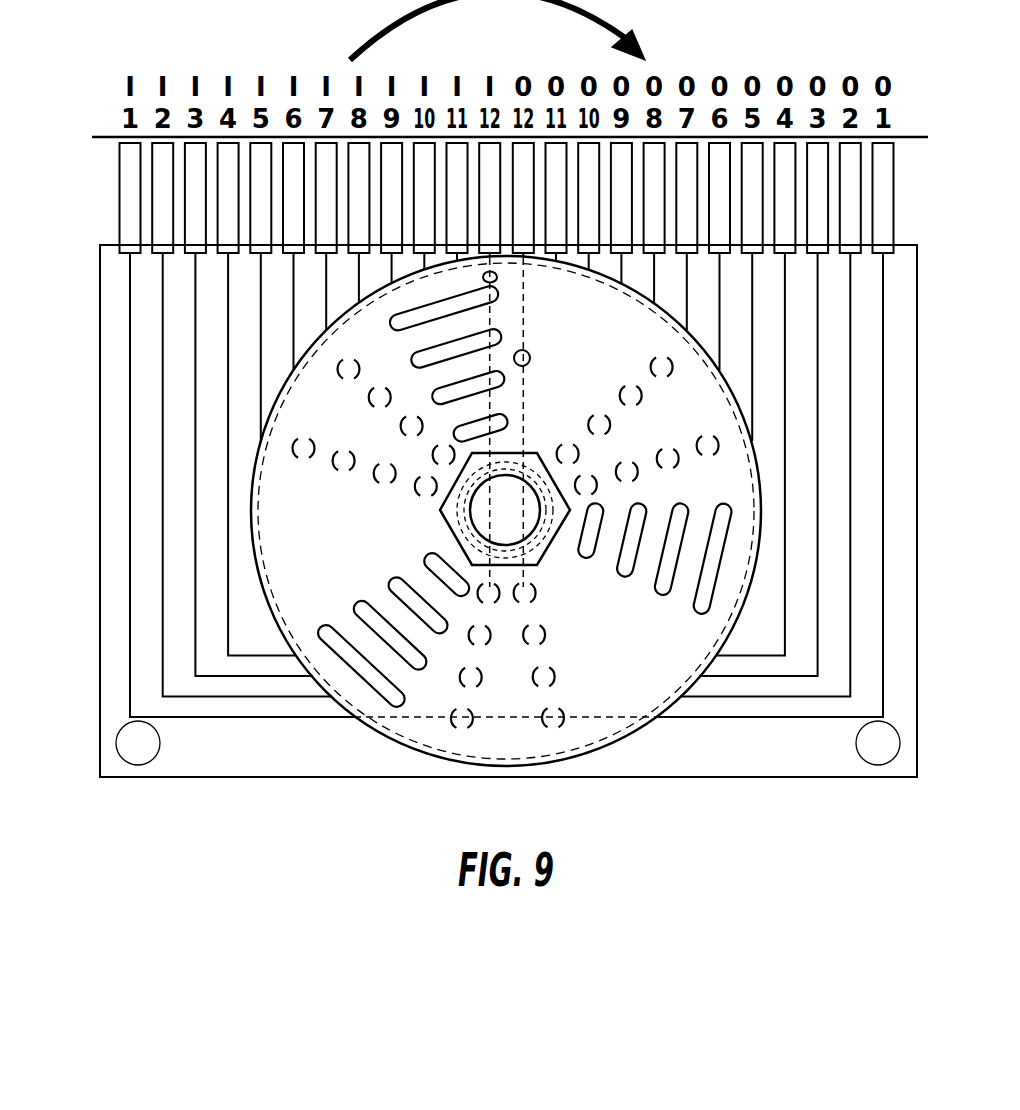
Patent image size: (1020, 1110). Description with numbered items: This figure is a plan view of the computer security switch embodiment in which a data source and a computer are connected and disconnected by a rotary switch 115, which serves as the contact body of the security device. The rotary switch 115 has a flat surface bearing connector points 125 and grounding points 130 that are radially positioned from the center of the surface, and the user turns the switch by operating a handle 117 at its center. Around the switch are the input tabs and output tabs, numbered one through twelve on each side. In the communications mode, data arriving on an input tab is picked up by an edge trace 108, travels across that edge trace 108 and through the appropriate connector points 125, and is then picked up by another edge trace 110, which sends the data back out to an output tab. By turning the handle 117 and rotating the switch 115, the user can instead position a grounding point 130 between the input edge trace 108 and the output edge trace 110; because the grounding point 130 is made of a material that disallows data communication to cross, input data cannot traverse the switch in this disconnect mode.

The edge trace 108 is at (483, 278).
The edge trace 110 is at (530, 357).
The rotary switch 115 is at (413, 721).
The handle 117 is at (498, 518).
The connector point 125 is at (670, 376).
The grounding point 130 is at (697, 603).